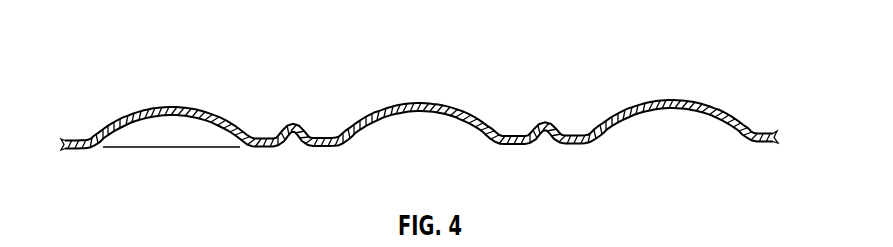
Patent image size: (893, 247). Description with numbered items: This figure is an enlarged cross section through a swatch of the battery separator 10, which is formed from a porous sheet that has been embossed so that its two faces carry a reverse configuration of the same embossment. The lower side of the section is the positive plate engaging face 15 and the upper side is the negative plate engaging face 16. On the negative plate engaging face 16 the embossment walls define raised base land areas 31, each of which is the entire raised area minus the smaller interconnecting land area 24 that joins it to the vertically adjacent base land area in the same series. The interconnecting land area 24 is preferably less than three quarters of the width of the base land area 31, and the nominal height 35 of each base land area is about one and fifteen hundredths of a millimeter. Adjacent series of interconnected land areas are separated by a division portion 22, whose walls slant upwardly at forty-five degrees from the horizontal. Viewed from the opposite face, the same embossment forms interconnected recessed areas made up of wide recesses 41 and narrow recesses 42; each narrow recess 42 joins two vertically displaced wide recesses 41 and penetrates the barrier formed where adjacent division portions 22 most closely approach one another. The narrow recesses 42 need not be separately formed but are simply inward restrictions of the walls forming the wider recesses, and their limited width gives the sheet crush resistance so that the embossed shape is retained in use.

The battery separator 10 is at (768, 145).
The positive plate engaging face 15 is at (688, 147).
The negative plate engaging face 16 is at (685, 88).
The division portion 22 is at (273, 139).
The interconnecting land area 24 is at (299, 126).
The base land area 31 is at (91, 68).
The height of base land area 35 is at (170, 116).
The wide recess 41 is at (340, 150).
The narrow recess 42 is at (545, 140).